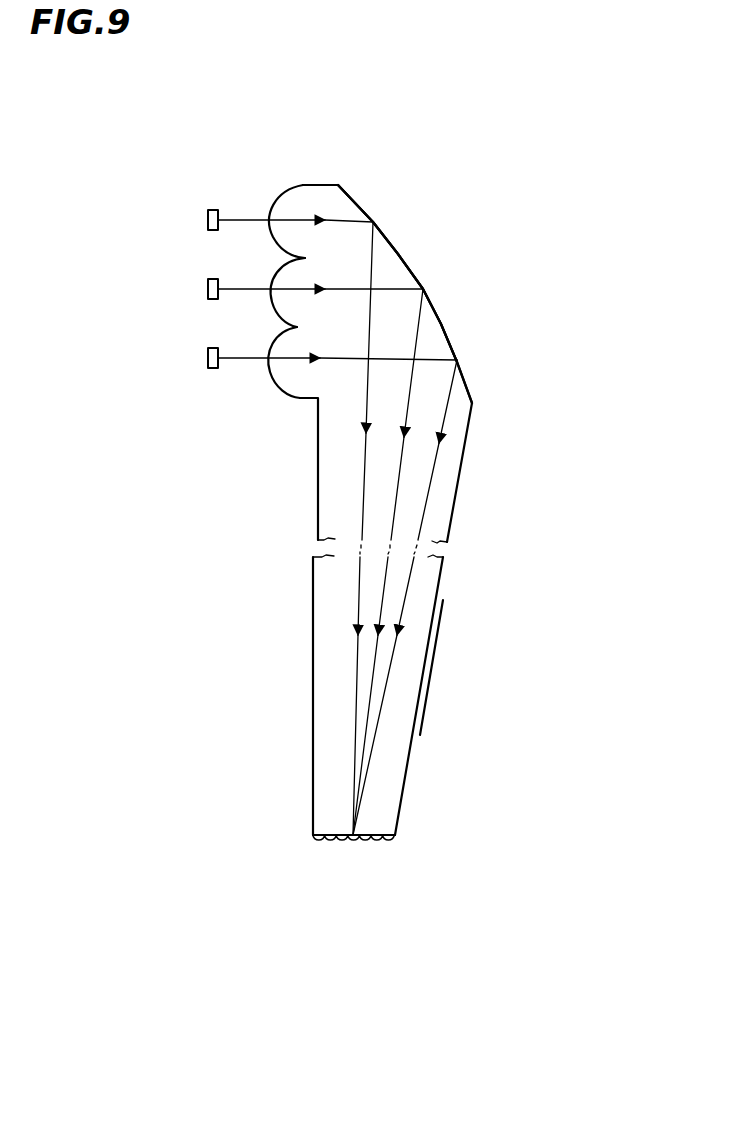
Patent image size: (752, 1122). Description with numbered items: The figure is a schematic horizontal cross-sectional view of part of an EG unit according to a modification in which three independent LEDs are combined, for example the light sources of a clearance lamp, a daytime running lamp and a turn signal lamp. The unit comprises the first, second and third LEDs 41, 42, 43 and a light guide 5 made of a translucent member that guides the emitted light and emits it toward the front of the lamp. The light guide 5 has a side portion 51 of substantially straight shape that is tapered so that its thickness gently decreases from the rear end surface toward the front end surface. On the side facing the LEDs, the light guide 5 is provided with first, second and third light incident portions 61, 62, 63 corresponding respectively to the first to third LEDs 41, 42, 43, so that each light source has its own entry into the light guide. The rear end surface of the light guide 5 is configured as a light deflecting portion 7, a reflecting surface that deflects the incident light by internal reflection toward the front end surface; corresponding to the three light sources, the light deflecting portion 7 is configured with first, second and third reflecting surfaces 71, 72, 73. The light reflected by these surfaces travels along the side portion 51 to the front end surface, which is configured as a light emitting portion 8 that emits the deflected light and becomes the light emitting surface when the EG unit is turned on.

The light guide 5 is at (455, 510).
The side portion 51 is at (412, 660).
The light emitting portion 8 is at (353, 835).
The light deflecting portion 7 is at (427, 218).
The first reflecting surface 71 is at (417, 274).
The second reflecting surface 72 is at (463, 371).
The third reflecting surface 73 is at (358, 204).
The first light incident portion 61 is at (283, 310).
The second light incident portion 62 is at (283, 392).
The third light incident portion 63 is at (283, 197).
The first LED 41 is at (206, 287).
The second LED 42 is at (206, 355).
The third LED 43 is at (206, 218).